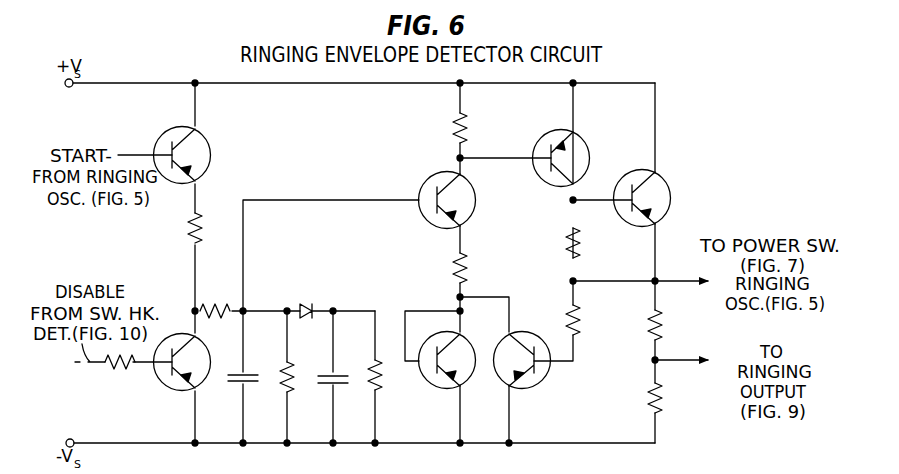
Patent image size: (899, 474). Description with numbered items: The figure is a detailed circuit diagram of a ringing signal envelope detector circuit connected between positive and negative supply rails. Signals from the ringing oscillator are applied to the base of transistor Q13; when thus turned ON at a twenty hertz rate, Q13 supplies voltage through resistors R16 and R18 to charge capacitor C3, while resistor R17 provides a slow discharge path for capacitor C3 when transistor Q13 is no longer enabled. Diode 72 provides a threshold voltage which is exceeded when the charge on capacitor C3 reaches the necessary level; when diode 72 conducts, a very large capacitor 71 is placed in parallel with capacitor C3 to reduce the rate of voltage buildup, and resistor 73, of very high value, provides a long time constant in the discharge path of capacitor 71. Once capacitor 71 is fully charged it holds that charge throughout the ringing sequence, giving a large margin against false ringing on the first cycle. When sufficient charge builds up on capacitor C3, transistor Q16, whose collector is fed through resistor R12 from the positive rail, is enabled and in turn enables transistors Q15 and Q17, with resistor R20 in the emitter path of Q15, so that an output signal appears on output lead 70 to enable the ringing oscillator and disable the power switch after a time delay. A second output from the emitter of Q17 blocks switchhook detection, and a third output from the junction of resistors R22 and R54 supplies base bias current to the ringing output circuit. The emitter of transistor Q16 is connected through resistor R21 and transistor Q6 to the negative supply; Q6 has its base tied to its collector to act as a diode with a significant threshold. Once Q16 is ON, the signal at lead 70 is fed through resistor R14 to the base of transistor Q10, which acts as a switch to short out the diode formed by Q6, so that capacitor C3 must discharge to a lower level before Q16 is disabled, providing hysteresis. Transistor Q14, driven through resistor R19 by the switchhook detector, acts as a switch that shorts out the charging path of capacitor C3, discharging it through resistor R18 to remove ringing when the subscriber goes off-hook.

The transistor Q13 is at (206, 140).
The resistor R16 is at (210, 228).
The resistor R18 is at (215, 299).
The resistor R19 is at (116, 369).
The transistor Q14 is at (208, 383).
The capacitor C3 is at (261, 370).
The resistor R17 is at (280, 386).
The diode 72 is at (310, 304).
The capacitor 71 is at (322, 385).
The resistor 73 is at (386, 380).
The resistor R12 is at (443, 128).
The transistor Q16 is at (476, 198).
The transistor Q15 is at (551, 133).
The transistor Q17 is at (658, 181).
The resistor R21 is at (478, 268).
The resistor R20 is at (593, 243).
The resistor R14 is at (590, 320).
The resistor R22 is at (648, 329).
The resistor R54 is at (636, 398).
The output lead 70 is at (682, 285).
The transistor Q6 is at (470, 378).
The transistor Q10 is at (536, 385).